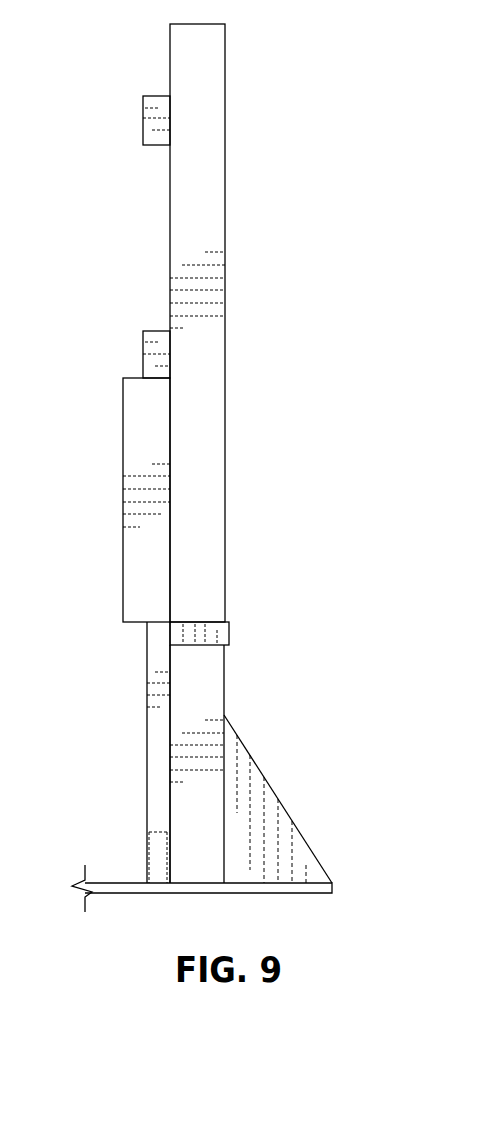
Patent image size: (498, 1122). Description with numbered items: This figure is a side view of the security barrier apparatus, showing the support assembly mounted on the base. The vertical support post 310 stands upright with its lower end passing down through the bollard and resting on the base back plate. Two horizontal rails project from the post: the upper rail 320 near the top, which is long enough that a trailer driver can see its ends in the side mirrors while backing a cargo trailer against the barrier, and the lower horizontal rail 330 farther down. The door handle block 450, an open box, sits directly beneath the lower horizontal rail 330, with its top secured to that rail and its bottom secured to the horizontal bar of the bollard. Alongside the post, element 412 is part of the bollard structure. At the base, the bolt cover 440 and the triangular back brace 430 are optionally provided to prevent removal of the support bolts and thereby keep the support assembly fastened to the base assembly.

The vertical support post 310 is at (215, 222).
The upper rail 320 is at (143, 112).
The lower horizontal rail 330 is at (142, 352).
The door handle block 450 is at (123, 460).
The rod 412 is at (152, 747).
The bolt cover 440 is at (160, 830).
The back brace 430 is at (283, 827).